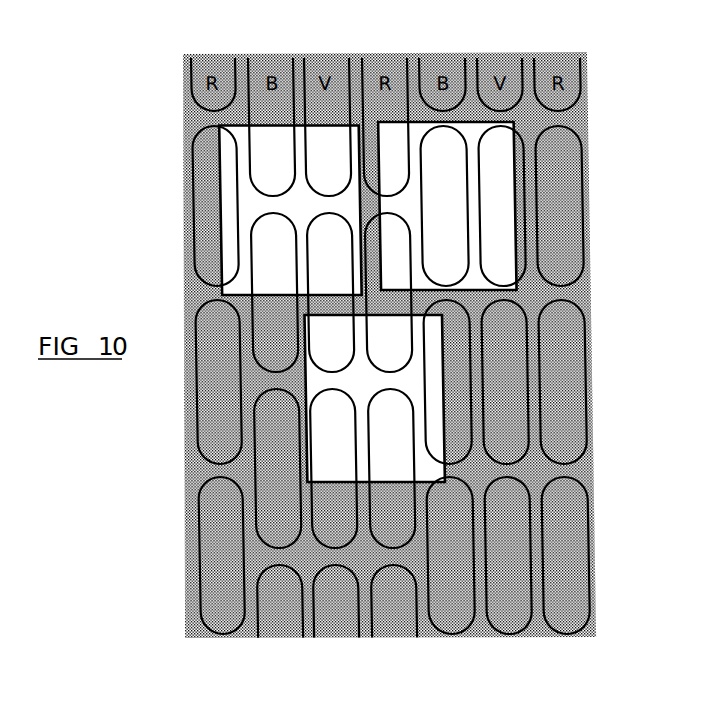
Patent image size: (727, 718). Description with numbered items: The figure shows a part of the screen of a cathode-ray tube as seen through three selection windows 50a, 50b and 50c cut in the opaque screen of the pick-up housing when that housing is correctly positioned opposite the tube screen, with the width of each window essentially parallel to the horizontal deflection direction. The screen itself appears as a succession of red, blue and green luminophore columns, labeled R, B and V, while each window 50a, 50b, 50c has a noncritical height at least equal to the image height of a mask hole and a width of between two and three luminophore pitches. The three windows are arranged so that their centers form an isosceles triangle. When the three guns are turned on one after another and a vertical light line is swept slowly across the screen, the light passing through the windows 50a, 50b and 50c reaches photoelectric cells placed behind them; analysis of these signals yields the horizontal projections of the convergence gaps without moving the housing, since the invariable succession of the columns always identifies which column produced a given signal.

The selection window 50a is at (517, 122).
The selection window 50b is at (221, 126).
The selection window 50c is at (446, 468).